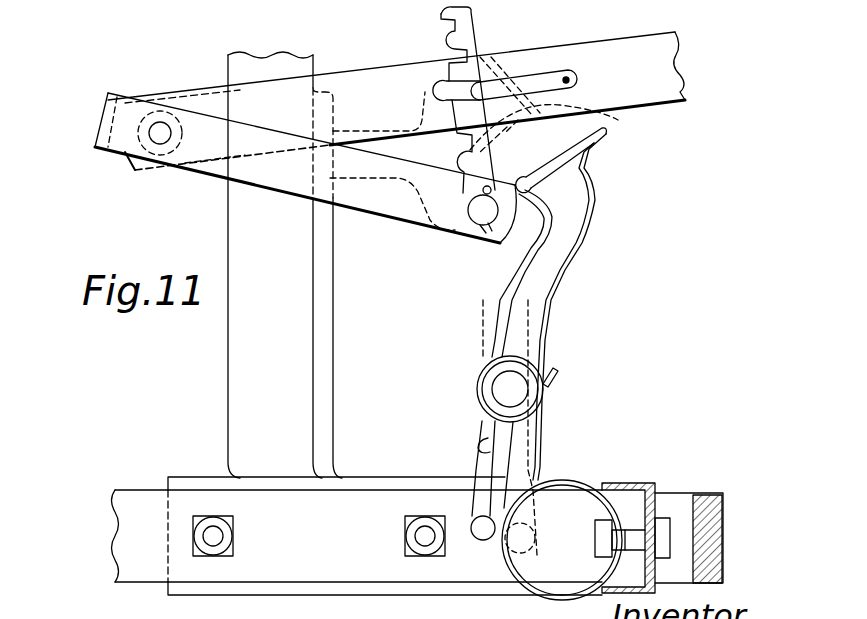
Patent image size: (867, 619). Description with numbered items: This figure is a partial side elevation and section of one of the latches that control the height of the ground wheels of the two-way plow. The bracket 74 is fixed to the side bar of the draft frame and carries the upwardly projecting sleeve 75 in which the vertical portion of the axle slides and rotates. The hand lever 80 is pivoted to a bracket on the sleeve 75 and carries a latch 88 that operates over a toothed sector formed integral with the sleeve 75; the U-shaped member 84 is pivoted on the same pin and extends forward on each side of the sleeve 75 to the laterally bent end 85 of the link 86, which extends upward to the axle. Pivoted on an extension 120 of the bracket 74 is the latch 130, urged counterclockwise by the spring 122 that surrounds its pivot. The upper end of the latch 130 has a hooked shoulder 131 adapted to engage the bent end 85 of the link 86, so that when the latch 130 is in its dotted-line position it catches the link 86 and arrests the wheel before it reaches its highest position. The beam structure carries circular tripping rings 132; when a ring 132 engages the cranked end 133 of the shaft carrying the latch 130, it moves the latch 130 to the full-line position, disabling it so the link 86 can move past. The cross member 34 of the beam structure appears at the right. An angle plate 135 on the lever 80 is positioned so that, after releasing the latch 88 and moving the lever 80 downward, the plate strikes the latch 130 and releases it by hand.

The cross member 34 is at (640, 483).
The bracket 74 is at (340, 508).
The sleeve 75 is at (238, 354).
The hand lever 80 is at (660, 57).
The U-shaped member 84 is at (390, 207).
The laterally bent end 85 is at (483, 215).
The link 86 is at (462, 33).
The latch 88 is at (545, 78).
The extension 120 is at (540, 428).
The spring 122 is at (557, 376).
The latch 130 is at (596, 244).
The hooked shoulder 131 is at (525, 165).
The tripping ring 132 is at (570, 474).
The cranked end 133 is at (478, 540).
The angle plate 135 is at (578, 116).